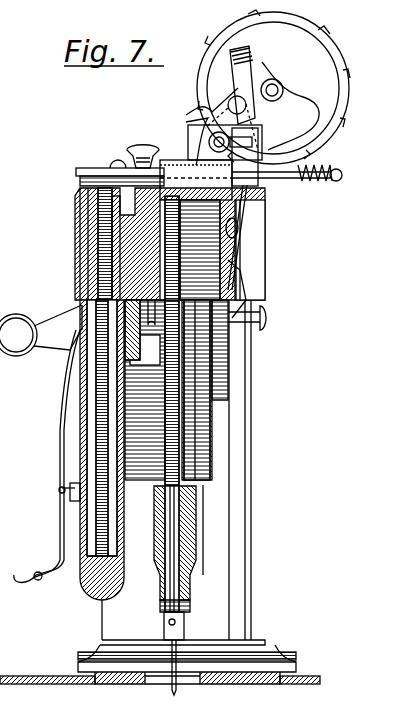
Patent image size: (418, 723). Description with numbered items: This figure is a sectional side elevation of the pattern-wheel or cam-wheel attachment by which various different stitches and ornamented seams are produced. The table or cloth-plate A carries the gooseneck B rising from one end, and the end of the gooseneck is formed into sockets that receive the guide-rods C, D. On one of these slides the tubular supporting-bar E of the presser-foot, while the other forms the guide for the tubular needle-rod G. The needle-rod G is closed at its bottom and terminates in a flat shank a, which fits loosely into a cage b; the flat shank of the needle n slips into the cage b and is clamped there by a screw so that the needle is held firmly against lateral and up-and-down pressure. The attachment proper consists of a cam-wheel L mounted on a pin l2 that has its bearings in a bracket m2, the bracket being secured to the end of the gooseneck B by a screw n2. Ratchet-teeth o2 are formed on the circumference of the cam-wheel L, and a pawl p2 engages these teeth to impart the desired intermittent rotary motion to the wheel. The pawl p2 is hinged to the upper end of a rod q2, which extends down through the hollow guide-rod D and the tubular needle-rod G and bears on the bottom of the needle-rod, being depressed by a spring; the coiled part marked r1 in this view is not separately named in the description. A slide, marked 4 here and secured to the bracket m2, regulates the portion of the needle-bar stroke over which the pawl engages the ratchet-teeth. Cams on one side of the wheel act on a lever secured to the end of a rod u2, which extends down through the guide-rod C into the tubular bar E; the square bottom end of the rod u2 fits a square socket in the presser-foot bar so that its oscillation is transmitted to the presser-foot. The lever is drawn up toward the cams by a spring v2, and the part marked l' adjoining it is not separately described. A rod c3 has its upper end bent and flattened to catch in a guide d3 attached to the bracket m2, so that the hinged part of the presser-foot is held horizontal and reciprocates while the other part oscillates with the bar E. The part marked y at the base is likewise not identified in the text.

The cam-wheel L is at (273, 87).
The ratchet-teeth o2 is at (227, 73).
The pin l2 is at (276, 82).
The bracket m2 is at (240, 125).
The pawl p2 is at (206, 126).
The bearing box 4 is at (225, 142).
The guide d3 is at (209, 164).
The shaft l' is at (281, 186).
The spring v2 is at (320, 163).
The screw n2 is at (143, 144).
The gooseneck B is at (130, 244).
The rod u2 is at (80, 209).
The rod c3 is at (135, 280).
The guide-rod C is at (145, 390).
The threaded rod r1 is at (160, 440).
The guide-rod D is at (225, 340).
The tubular supporting-bar E is at (110, 500).
The rod q2 is at (176, 520).
The tubular needle-rod G is at (200, 520).
The flat shank a is at (164, 625).
The cage b is at (178, 618).
The needle n is at (164, 671).
The base foot y is at (120, 686).
The table or cloth-plate A is at (50, 686).